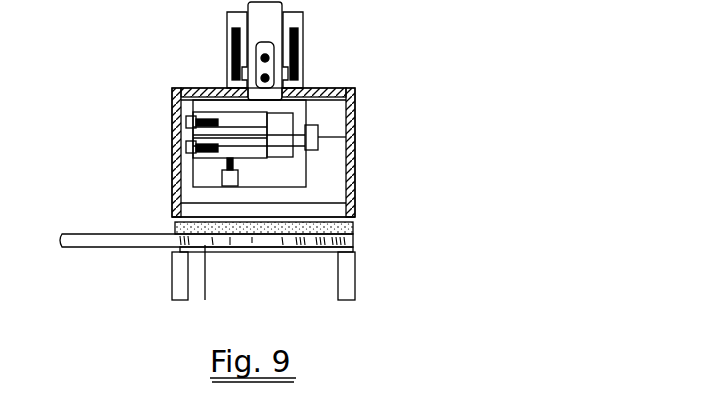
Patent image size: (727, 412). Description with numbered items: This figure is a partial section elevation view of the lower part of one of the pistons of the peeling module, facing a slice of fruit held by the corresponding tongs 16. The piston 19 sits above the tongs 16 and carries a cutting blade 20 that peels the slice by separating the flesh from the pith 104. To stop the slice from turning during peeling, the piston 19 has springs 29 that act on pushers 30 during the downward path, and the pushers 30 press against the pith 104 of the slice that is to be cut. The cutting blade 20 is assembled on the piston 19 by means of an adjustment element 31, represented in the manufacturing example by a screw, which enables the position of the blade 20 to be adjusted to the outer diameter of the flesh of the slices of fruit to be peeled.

The tongs 16 is at (205, 300).
The piston 19 is at (293, 180).
The blade 20 is at (172, 178).
The spring 29 is at (228, 52).
The pusher 30 is at (357, 119).
The adjustment element 31 is at (355, 138).
The pith 104 is at (355, 227).